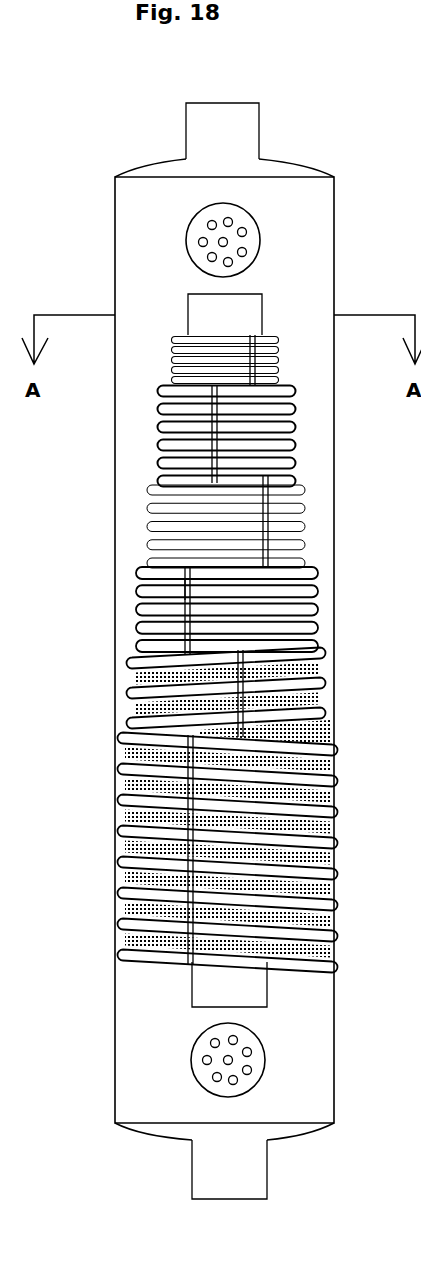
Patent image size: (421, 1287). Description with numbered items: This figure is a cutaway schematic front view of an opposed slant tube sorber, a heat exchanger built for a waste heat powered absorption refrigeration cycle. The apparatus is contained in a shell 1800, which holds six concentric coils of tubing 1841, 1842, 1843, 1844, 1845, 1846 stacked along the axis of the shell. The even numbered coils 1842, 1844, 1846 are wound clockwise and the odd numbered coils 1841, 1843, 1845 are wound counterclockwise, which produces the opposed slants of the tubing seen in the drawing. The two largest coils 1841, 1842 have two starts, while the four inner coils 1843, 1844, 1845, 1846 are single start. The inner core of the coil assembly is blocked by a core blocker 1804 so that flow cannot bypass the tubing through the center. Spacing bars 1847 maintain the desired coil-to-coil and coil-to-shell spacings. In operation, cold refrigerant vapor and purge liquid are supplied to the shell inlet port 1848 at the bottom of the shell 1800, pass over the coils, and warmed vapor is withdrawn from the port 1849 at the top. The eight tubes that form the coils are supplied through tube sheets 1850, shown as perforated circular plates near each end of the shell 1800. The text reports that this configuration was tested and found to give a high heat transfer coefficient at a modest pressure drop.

The shell 1800 is at (337, 990).
The port 1849 is at (262, 122).
The shell inlet port 1848 is at (271, 1169).
The tube sheets 1850 is at (252, 223).
The coil of tubing 1846 is at (272, 352).
The coil of tubing 1845 is at (282, 434).
The coil of tubing 1844 is at (286, 530).
The coil of tubing 1843 is at (298, 578).
The coil of tubing 1842 is at (310, 662).
The coil of tubing 1841 is at (325, 823).
The spacing bars 1847 is at (197, 593).
The core blocker 1804 is at (258, 1008).